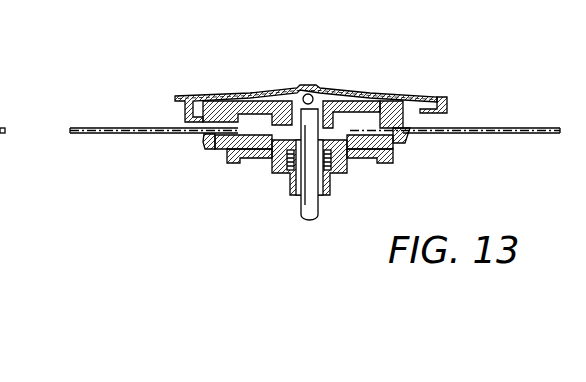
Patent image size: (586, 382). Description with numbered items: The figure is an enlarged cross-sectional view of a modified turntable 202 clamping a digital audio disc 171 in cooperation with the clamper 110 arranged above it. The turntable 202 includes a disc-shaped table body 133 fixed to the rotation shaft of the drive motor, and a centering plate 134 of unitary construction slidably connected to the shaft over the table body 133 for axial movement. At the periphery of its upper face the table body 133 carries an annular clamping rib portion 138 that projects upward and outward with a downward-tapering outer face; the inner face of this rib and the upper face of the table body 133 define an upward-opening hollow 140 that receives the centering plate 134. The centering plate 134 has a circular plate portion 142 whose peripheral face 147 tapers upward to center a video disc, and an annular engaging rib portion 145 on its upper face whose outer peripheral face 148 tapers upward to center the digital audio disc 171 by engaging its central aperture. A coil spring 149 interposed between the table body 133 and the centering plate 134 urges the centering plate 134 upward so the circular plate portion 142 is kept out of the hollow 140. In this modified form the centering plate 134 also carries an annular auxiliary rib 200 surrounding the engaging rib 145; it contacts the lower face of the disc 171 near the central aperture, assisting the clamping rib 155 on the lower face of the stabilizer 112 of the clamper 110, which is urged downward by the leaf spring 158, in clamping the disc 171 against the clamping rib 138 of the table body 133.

The clamper 110 is at (386, 88).
The stabilizer 112 is at (218, 101).
The table body 133 is at (357, 161).
The centering plate 134 is at (340, 112).
The clamping rib portion 138 is at (405, 140).
The hollow 140 is at (220, 149).
The circular plate portion 142 is at (237, 160).
The engaging rib portion 145 is at (308, 94).
The peripheral face 147 is at (210, 141).
The outer peripheral face 148 is at (324, 108).
The coil spring 149 is at (277, 172).
The clamping rib portion 155 is at (412, 97).
The leaf spring 158 is at (192, 96).
The digital audio disc 171 is at (130, 128).
The auxiliary rib 200 is at (268, 122).
The turntable 202 is at (385, 161).